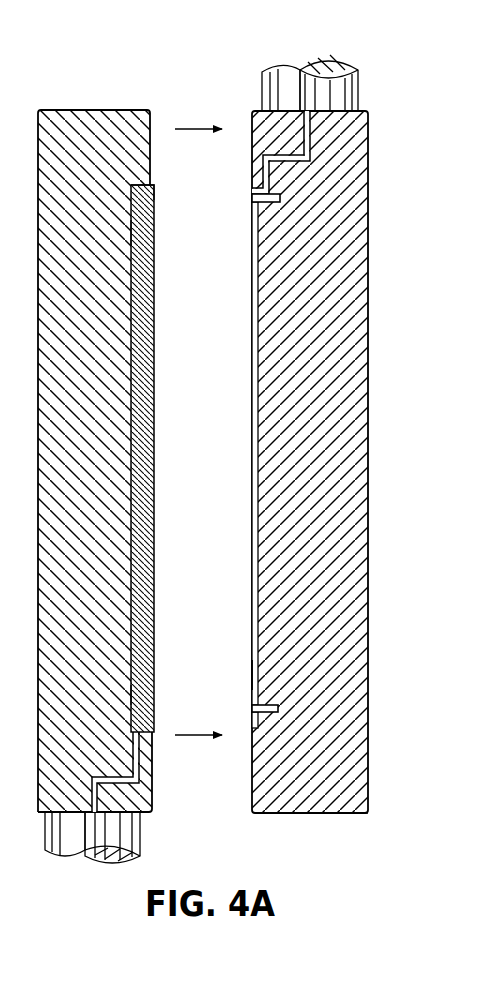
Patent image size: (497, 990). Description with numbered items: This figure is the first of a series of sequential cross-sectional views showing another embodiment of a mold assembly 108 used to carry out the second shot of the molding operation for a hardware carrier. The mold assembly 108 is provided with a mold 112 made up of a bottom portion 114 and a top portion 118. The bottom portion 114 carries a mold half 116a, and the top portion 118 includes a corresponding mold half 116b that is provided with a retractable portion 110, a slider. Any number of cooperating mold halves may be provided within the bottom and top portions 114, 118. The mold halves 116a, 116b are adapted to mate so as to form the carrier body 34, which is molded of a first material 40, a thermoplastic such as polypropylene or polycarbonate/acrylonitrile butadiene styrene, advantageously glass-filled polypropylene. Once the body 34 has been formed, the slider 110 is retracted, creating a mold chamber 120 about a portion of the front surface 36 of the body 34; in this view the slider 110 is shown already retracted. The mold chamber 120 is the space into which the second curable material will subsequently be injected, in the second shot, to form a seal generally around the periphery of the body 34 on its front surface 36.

The body 34 is at (132, 694).
The front surface 36 is at (156, 207).
The first material 40 is at (140, 231).
The mold assembly 108 is at (389, 70).
The retractable portion 110 is at (281, 200).
The mold 112 is at (198, 122).
The bottom portion 114 is at (62, 120).
The mold half 116a is at (150, 188).
The mold half 116b is at (253, 675).
The top portion 118 is at (349, 813).
The mold chamber 120 is at (281, 709).